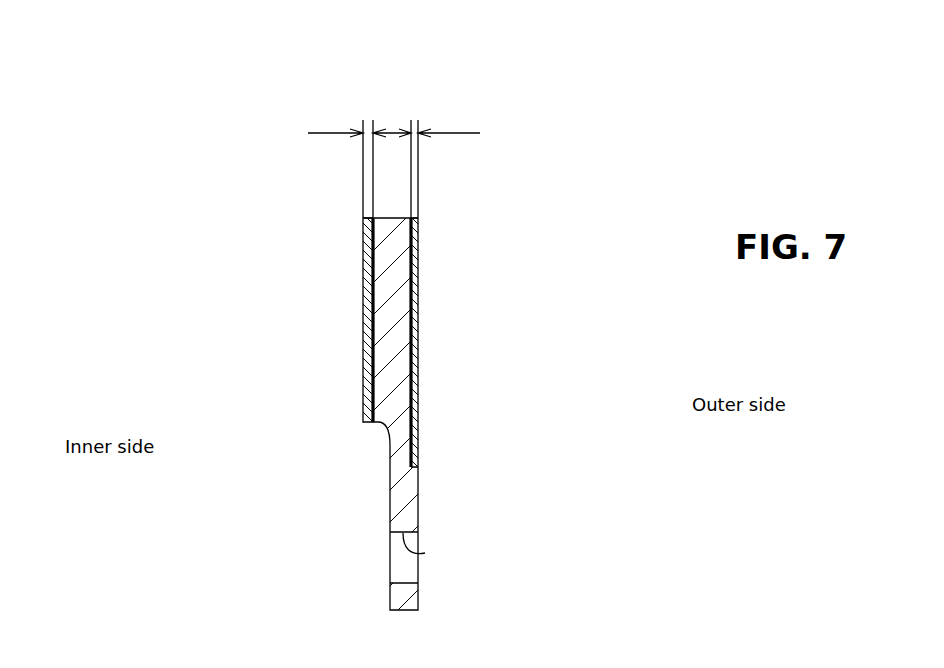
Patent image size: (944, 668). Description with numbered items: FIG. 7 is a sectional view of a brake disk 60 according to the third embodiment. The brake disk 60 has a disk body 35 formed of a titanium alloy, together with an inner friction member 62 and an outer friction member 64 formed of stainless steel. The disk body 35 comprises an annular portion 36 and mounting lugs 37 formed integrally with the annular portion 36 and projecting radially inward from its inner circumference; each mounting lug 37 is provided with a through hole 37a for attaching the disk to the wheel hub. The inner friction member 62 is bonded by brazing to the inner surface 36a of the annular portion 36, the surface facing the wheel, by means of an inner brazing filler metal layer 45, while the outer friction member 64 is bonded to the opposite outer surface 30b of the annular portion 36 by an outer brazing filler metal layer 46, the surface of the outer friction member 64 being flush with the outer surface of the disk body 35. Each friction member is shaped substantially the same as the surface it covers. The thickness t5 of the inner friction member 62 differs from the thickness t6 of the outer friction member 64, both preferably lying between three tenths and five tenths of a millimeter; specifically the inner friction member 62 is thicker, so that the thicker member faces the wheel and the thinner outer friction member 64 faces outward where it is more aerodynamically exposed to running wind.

The brake disk 60 is at (616, 136).
The disk body 35 is at (278, 385).
The annular portion 36 is at (383, 358).
The mounting lug 37 is at (390, 502).
The through hole 37a is at (425, 553).
The inner surface 36a is at (366, 266).
The outer panel end portion 30b is at (418, 262).
The inner friction member 62 is at (366, 308).
The outer friction member 64 is at (418, 318).
The inner brazing filler metal layer 45 is at (365, 228).
The outer brazing filler metal layer 46 is at (418, 225).
The thickness of the inner friction member t5 is at (332, 167).
The thickness of the outer friction member t6 is at (453, 167).